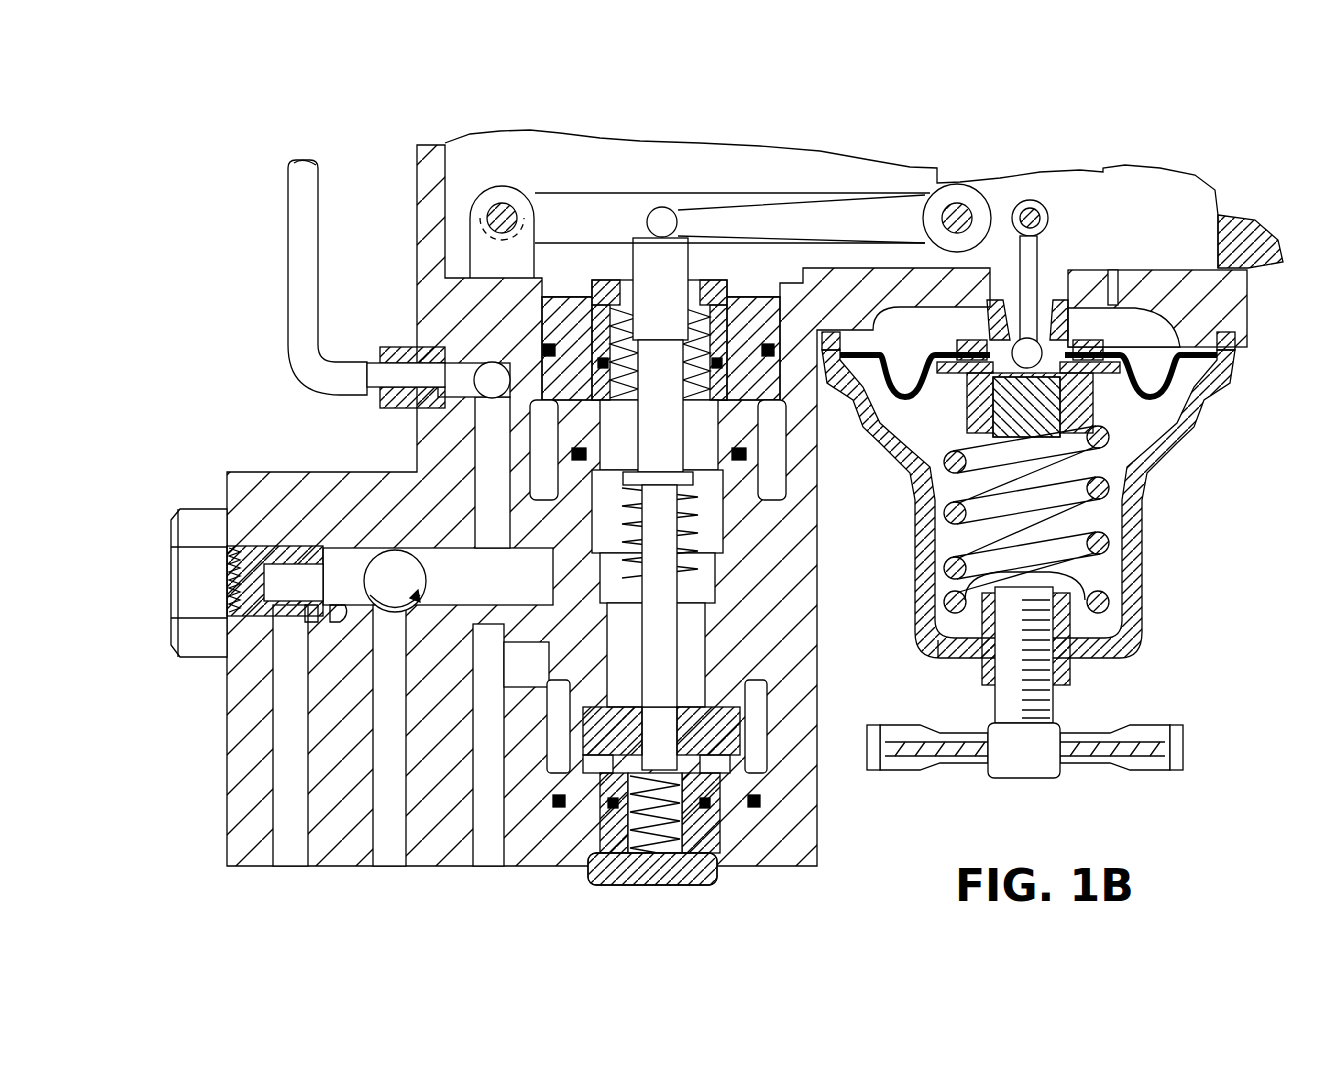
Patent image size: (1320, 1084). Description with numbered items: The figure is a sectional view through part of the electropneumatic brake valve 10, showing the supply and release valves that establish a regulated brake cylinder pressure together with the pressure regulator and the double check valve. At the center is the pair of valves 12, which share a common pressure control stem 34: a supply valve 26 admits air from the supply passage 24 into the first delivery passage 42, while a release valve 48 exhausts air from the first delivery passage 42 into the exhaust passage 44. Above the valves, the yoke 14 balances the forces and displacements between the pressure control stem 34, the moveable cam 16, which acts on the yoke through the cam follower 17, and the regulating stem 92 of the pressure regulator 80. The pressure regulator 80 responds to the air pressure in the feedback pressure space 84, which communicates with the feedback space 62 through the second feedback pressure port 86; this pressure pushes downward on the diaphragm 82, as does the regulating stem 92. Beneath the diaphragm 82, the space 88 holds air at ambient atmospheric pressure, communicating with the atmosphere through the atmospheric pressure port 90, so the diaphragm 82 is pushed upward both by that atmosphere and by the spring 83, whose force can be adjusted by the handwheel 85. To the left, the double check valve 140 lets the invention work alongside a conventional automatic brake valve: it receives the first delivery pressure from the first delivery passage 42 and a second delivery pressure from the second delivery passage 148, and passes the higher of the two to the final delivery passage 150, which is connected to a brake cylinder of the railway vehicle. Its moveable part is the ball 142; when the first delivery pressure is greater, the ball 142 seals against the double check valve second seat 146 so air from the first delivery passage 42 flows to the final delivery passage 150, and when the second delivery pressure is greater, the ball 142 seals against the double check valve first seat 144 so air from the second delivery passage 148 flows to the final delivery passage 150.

The electropneumatic brake valve 10 is at (255, 136).
The pair of valves 12 is at (777, 677).
The yoke 14 is at (787, 212).
The moveable cam 16 is at (1023, 175).
The cam follower 17 is at (935, 195).
The supply passage 24 is at (490, 848).
The supply valve 26 is at (733, 712).
The pressure control stem 34 is at (645, 260).
The first delivery passage 42 is at (455, 565).
The exhaust passage 44 is at (807, 430).
The release valve 48 is at (727, 463).
The feedback space 62 is at (592, 152).
The pressure regulator 80 is at (1135, 532).
The diaphragm 82 is at (1188, 428).
The spring 83 is at (1077, 550).
The feedback pressure space 84 is at (1162, 333).
The handwheel 85 is at (1183, 740).
The second feedback pressure port 86 is at (1113, 273).
The space under diaphragm 88 is at (1108, 462).
The atmospheric pressure port 90 is at (948, 655).
The regulating stem 92 is at (1040, 247).
The double check valve 140 is at (300, 522).
The ball 142 is at (383, 572).
The double check valve first seat 144 is at (382, 607).
The double check valve second seat 146 is at (317, 630).
The second delivery passage 148 is at (283, 757).
The final delivery passage 150 is at (388, 848).